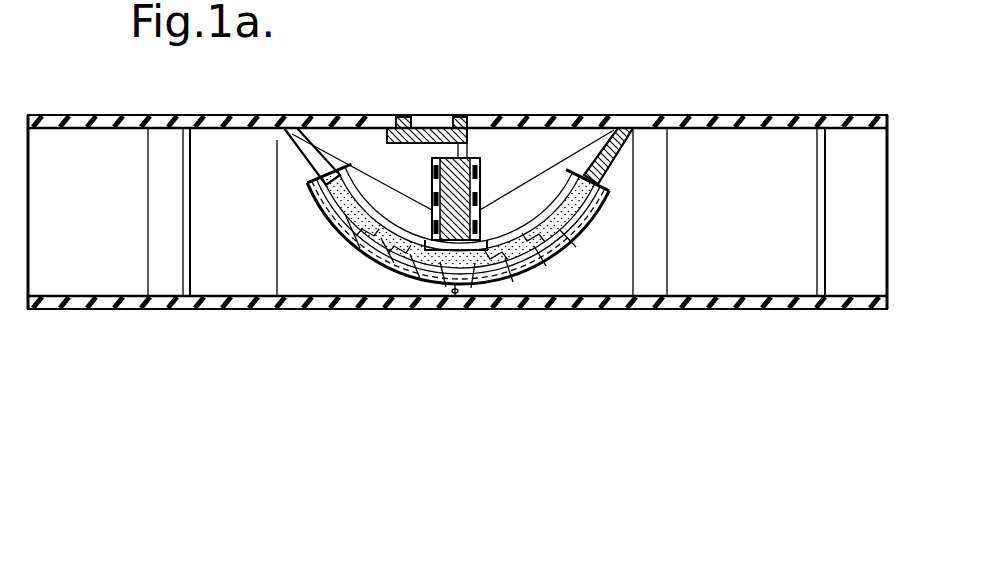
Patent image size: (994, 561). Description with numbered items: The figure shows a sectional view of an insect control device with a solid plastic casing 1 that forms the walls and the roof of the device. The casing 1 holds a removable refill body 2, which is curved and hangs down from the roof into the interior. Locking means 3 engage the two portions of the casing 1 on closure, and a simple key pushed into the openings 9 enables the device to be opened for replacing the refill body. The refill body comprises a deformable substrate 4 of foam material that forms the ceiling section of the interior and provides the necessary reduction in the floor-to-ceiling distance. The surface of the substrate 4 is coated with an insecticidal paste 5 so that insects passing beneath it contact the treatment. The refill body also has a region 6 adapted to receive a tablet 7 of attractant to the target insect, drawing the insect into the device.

The casing 1 is at (727, 123).
The curved outer shell 2 is at (575, 227).
The locking means 3 is at (386, 124).
The deformable substrate 4 is at (530, 243).
The insecticidal paste 5 is at (493, 280).
The region 6 is at (480, 200).
The tablet 7 is at (457, 170).
The openings 9 is at (403, 124).